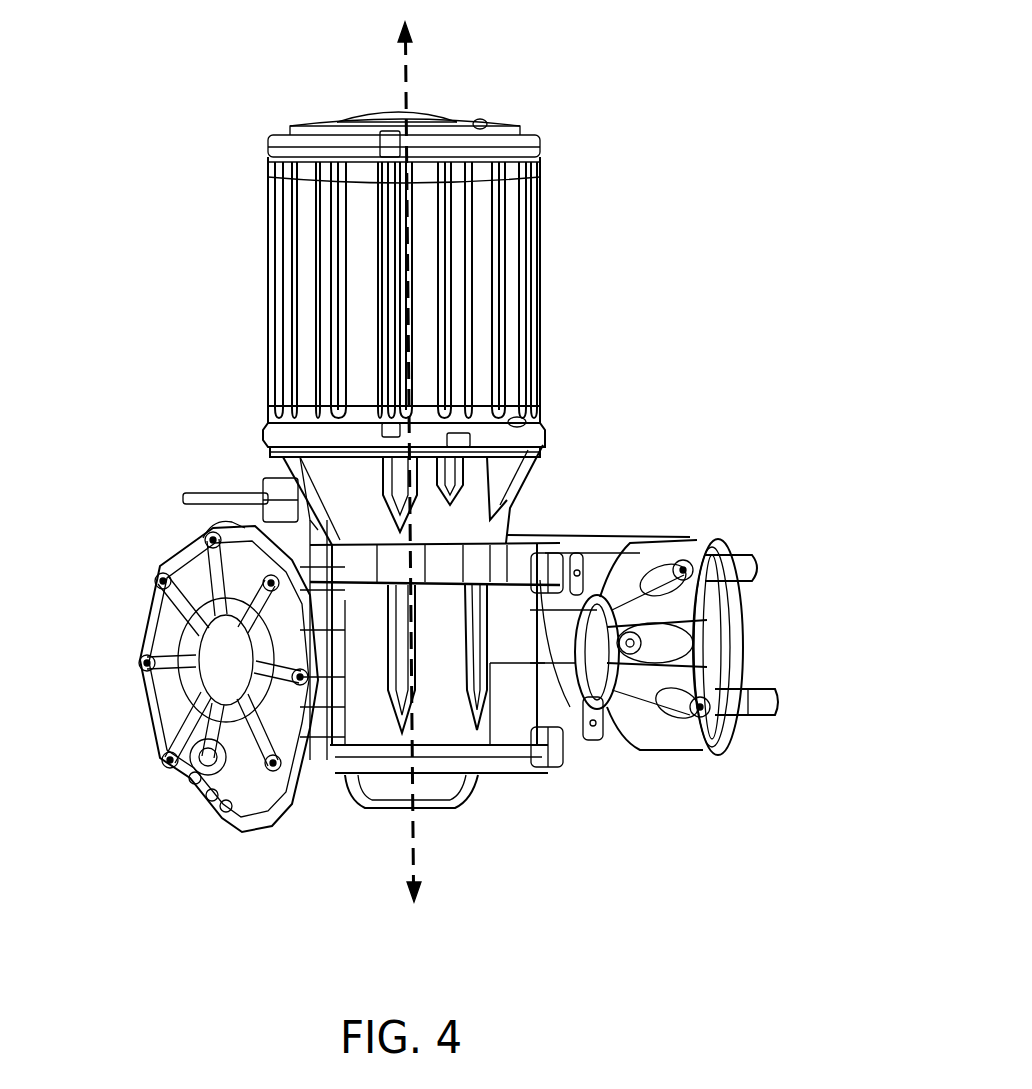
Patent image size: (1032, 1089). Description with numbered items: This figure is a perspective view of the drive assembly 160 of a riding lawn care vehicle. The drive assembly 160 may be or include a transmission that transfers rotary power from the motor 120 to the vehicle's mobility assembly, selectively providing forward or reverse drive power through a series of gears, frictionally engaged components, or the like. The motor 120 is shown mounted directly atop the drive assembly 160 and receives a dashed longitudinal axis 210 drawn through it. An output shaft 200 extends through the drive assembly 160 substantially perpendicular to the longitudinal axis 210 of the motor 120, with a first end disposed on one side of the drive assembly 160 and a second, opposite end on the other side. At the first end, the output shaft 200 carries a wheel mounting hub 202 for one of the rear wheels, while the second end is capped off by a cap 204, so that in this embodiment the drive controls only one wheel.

The motor 120 is at (297, 343).
The drive assembly 160 is at (352, 508).
The cap 204 is at (222, 683).
The output shaft 200 is at (578, 612).
The wheel mounting hub 202 is at (740, 565).
The longitudinal axis 210 is at (408, 73).